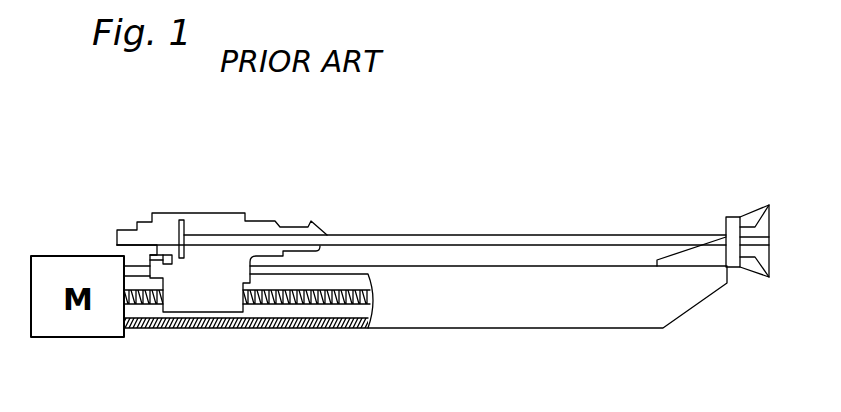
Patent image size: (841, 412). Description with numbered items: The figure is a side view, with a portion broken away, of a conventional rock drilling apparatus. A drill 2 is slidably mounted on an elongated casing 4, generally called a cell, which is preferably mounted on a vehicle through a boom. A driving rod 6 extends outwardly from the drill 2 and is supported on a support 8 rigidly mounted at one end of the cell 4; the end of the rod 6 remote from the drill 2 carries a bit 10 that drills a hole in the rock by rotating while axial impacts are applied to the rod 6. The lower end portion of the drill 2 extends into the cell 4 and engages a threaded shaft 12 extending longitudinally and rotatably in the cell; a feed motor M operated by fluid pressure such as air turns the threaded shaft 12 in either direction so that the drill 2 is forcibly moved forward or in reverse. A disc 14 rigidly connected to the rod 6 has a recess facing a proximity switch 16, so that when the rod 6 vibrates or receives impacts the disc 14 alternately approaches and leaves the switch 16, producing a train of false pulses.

The drill 2 is at (212, 213).
The elongated casing 4 is at (458, 312).
The driving rod 6 is at (447, 235).
The support 8 is at (705, 257).
The bit 10 is at (760, 255).
The threaded shaft 12 is at (306, 297).
The disc 14 is at (175, 220).
The proximity switch 16 is at (170, 264).